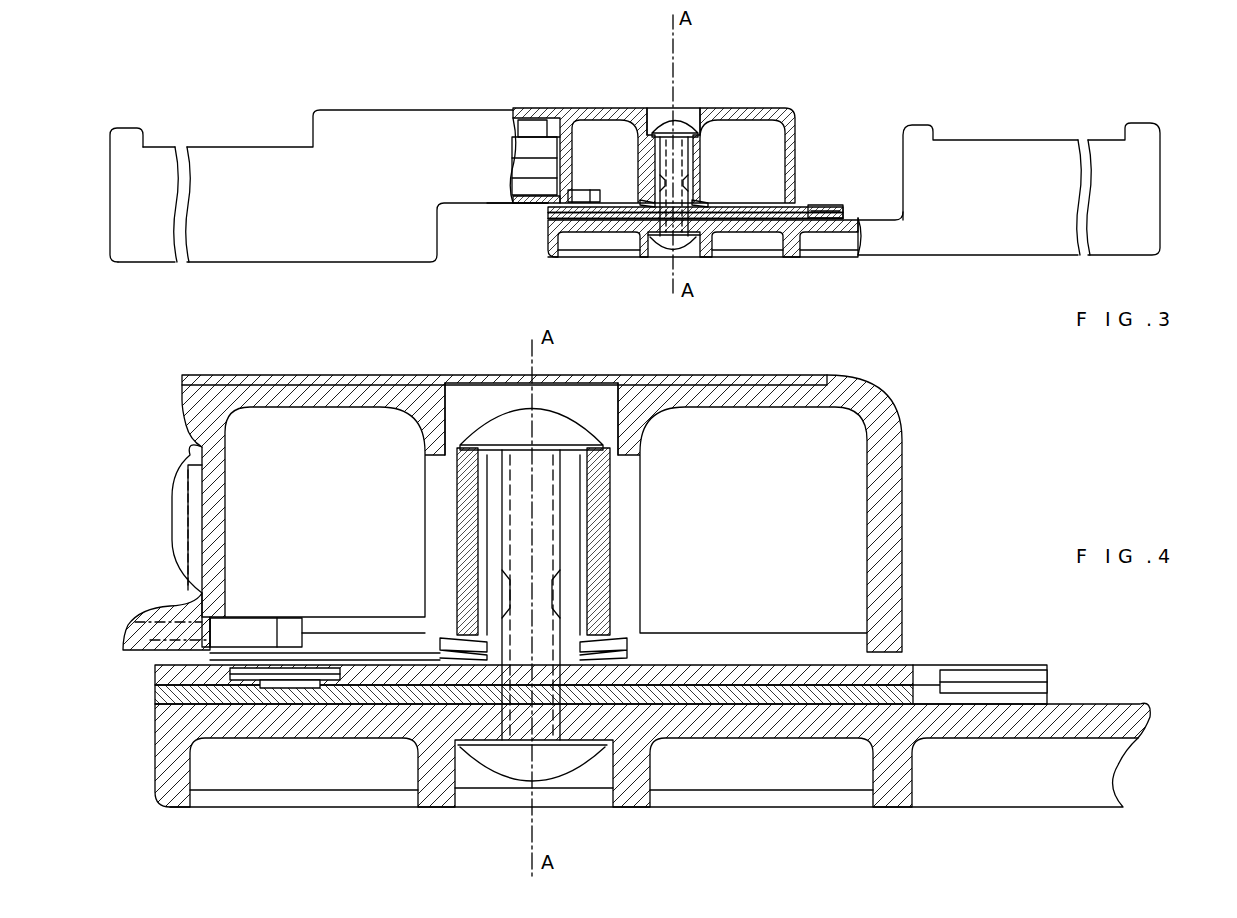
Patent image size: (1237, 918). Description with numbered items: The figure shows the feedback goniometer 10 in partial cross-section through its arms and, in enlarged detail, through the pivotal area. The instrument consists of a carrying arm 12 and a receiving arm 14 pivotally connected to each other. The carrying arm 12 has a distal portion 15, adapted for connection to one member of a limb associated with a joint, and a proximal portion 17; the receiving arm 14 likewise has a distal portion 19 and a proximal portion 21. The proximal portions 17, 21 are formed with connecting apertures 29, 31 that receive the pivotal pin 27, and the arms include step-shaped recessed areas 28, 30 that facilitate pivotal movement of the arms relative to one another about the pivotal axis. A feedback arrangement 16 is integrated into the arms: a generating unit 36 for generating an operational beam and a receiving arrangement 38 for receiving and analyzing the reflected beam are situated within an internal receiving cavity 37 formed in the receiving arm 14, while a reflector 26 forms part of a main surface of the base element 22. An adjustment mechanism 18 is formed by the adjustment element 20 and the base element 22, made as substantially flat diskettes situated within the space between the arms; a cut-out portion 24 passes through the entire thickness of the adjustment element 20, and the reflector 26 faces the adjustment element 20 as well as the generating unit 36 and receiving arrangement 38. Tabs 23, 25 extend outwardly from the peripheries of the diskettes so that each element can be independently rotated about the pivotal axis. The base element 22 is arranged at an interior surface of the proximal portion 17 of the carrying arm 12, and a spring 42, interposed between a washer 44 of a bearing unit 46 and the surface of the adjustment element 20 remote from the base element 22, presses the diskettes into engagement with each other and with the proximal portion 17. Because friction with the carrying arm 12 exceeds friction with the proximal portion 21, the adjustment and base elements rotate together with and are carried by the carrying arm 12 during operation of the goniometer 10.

In FIG. 3, the feedback goniometer 10 is at (732, 82).
In FIG. 3, the carrying arm 12 is at (845, 242).
In FIG. 3, the receiving arm 14 is at (330, 240).
In FIG. 3, the distal portion 15 is at (1150, 210).
In FIG. 3, the feedback arrangement 16 is at (584, 196).
In FIG. 4, the feedback arrangement 16 is at (320, 652).
In FIG. 3, the proximal portion 17 is at (612, 232).
In FIG. 4, the proximal portion 17 is at (632, 720).
In FIG. 3, the adjustment mechanism 18 is at (695, 216).
In FIG. 4, the adjustment mechanism 18 is at (150, 692).
In FIG. 3, the distal portion 19 is at (132, 245).
In FIG. 3, the adjustment element 20 is at (695, 210).
In FIG. 4, the adjustment element 20 is at (150, 678).
In FIG. 3, the proximal portion 21 is at (623, 110).
In FIG. 4, the proximal portion 21 is at (872, 402).
In FIG. 4, the base element 22 is at (282, 700).
In FIG. 3, the tab 23 is at (825, 211).
In FIG. 4, the tab 23 is at (996, 665).
In FIG. 4, the cut-out portion 24 is at (290, 682).
In FIG. 4, the tab 25 is at (1052, 700).
In FIG. 4, the reflector 26 is at (260, 700).
In FIG. 3, the pivotal pin 27 is at (652, 125).
In FIG. 4, the pivotal pin 27 is at (497, 428).
In FIG. 3, the step-shaped recessed area 28 is at (875, 213).
In FIG. 3, the connecting aperture 29 is at (702, 240).
In FIG. 4, the connecting aperture 29 is at (480, 770).
In FIG. 3, the step-shaped recessed area 30 is at (489, 208).
In FIG. 3, the connecting aperture 31 is at (690, 118).
In FIG. 4, the connecting aperture 31 is at (575, 393).
In FIG. 4, the generating unit 36 is at (248, 612).
In FIG. 4, the internal receiving cavity 37 is at (232, 560).
In FIG. 4, the receiving arrangement 38 is at (292, 628).
In FIG. 3, the spring 42 is at (700, 203).
In FIG. 4, the spring 42 is at (628, 660).
In FIG. 3, the washer 44 is at (647, 203).
In FIG. 4, the washer 44 is at (640, 642).
In FIG. 4, the bearing unit 46 is at (605, 540).